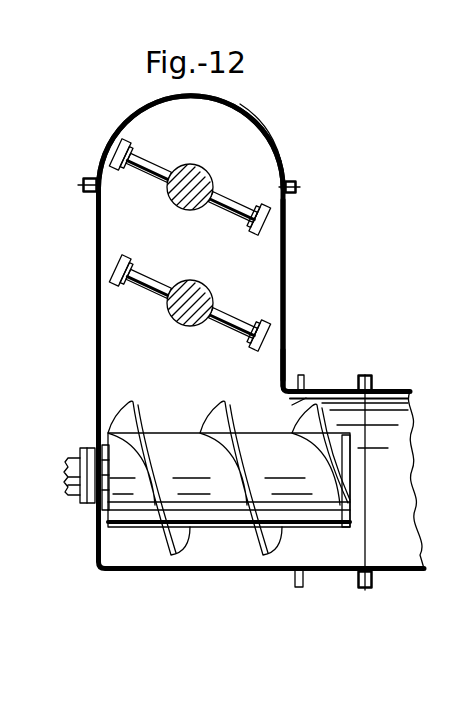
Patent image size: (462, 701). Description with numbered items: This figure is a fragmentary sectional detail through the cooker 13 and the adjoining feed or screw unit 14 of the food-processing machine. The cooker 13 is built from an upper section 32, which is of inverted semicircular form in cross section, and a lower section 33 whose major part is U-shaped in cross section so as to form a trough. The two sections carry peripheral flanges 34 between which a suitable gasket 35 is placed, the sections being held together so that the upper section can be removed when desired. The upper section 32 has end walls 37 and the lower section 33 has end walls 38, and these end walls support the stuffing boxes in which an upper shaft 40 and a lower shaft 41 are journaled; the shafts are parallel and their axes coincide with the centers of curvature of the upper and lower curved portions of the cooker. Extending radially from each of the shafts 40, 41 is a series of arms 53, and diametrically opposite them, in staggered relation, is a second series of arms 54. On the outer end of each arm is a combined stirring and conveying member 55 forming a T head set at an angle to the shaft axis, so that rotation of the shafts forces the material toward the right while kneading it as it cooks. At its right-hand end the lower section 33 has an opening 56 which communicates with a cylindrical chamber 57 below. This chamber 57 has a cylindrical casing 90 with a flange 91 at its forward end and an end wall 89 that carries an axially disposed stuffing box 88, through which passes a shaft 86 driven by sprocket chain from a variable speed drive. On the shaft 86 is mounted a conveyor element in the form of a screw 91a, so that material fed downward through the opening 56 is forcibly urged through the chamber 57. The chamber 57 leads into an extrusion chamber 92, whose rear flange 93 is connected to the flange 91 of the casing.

The cooker 13 is at (264, 167).
The feed or screw unit 14 is at (121, 546).
The upper section 32 is at (276, 143).
The lower section 33 is at (287, 289).
The peripheral flanges 34 is at (299, 183).
The gasket 35 is at (298, 188).
The end walls 37 is at (243, 128).
The end walls 38 is at (267, 270).
The upper shaft 40 is at (205, 177).
The lower shaft 41 is at (204, 289).
The arms 53 is at (247, 213).
The second series of arms 54 is at (160, 178).
The combined stirring and conveying member 55 is at (124, 143).
The opening 56 is at (262, 363).
The cylindrical chamber 57 is at (311, 389).
The shaft 86 is at (66, 462).
The stuffing box 88 is at (86, 447).
The end wall 89 is at (95, 531).
The cylindrical casing 90 is at (214, 572).
The flange 91 is at (360, 374).
The screw 91a is at (172, 563).
The extrusion chamber 92 is at (389, 419).
The flange 93 is at (372, 378).